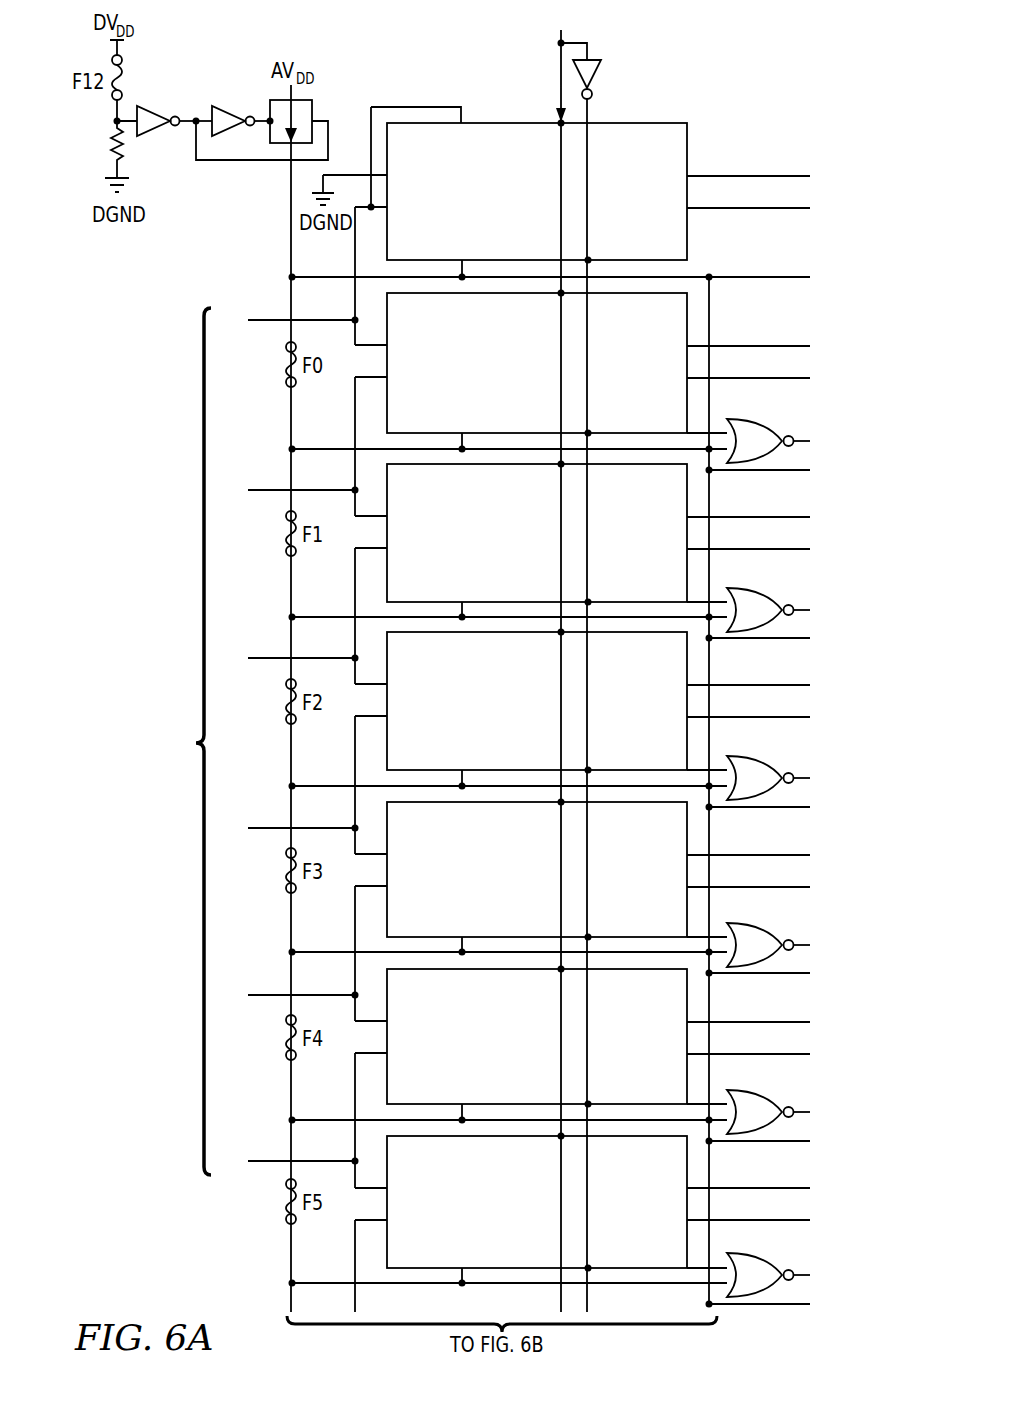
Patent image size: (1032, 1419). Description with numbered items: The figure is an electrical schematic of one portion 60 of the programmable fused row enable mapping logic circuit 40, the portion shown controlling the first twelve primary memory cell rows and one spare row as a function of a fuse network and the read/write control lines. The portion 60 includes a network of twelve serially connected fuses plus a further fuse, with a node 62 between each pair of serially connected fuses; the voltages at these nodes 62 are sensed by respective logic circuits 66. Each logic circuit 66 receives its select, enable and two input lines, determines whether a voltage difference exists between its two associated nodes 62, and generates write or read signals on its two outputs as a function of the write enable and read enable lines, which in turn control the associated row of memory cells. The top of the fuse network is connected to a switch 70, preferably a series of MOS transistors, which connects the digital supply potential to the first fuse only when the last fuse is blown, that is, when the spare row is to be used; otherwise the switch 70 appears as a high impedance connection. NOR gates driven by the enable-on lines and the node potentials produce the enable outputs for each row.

The programmable fused row enable mapping logic circuit 40 is at (144, 782).
The portion of circuit 60 is at (726, 72).
The node 62 is at (291, 276).
The logic circuit 66 is at (660, 123).
The switch 70 is at (312, 108).